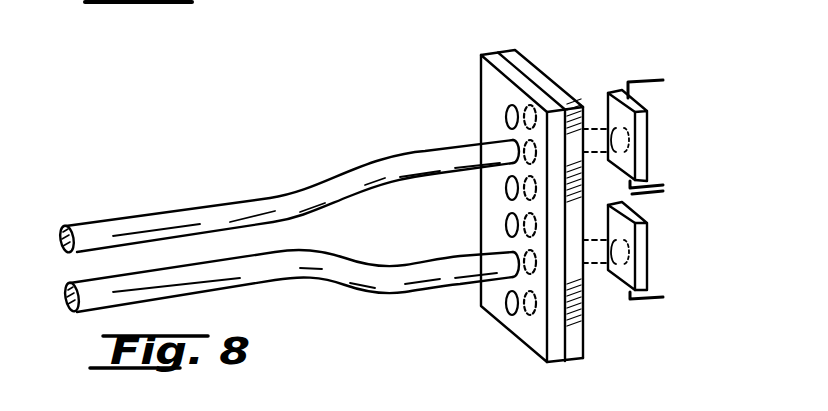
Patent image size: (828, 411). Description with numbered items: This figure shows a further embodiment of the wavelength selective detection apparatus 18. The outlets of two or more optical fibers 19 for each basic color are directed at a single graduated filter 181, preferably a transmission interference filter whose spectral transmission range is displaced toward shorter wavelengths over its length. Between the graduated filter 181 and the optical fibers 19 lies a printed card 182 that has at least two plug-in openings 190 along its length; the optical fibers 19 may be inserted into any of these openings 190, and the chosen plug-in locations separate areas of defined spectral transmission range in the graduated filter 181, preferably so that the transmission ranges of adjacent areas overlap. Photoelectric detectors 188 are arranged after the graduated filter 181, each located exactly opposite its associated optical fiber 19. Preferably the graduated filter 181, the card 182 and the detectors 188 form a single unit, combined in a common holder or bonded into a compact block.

The wavelength selective detection apparatus 18 is at (613, 53).
The optical fibers 19 is at (360, 173).
The graduated filter 181 is at (577, 343).
The printed card 182 is at (490, 80).
The photoelectric detectors 188 is at (643, 150).
The plug-in openings 190 is at (505, 148).